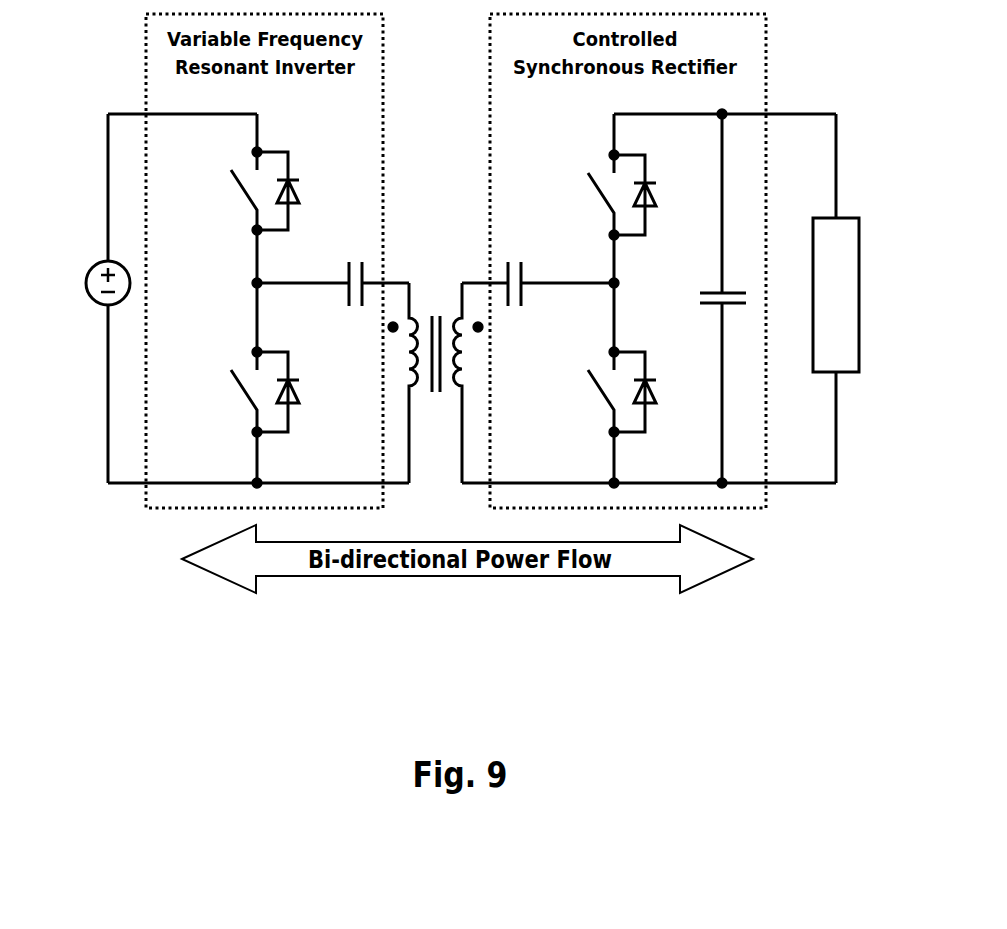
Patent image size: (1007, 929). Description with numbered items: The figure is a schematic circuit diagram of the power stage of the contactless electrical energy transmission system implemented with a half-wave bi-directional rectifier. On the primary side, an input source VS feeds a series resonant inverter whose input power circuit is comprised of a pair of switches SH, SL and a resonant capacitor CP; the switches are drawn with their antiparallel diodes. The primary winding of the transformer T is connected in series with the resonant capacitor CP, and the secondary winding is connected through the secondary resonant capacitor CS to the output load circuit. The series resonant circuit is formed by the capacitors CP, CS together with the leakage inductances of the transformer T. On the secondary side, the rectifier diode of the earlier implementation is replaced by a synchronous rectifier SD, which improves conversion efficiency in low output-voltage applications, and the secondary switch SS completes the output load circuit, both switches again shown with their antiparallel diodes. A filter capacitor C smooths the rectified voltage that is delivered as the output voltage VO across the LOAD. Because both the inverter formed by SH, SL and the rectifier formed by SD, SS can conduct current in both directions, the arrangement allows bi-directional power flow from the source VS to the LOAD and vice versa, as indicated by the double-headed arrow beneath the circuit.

The input voltage source VS is at (86, 298).
The switch SH is at (238, 191).
The switch SL is at (238, 392).
The resonant capacitor CP is at (371, 265).
The transformer T is at (448, 362).
The resonant capacitor CS is at (517, 265).
The synchronous rectifier SD is at (604, 195).
The secondary switch SS is at (604, 392).
The filter capacitor C is at (707, 298).
The load LOAD is at (836, 298).
The output voltage VO is at (891, 292).